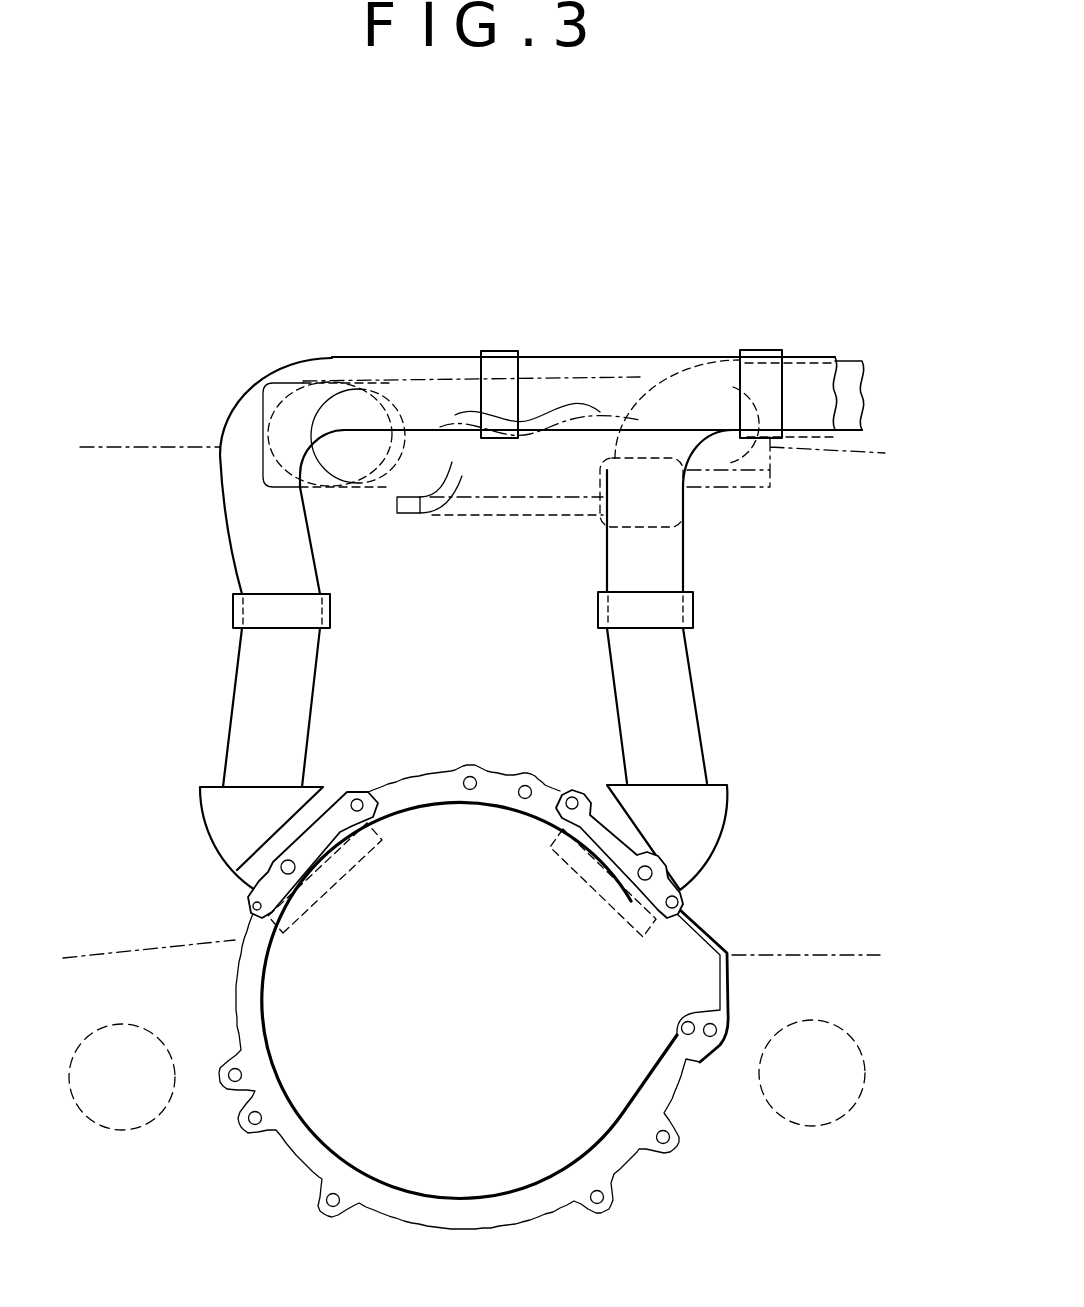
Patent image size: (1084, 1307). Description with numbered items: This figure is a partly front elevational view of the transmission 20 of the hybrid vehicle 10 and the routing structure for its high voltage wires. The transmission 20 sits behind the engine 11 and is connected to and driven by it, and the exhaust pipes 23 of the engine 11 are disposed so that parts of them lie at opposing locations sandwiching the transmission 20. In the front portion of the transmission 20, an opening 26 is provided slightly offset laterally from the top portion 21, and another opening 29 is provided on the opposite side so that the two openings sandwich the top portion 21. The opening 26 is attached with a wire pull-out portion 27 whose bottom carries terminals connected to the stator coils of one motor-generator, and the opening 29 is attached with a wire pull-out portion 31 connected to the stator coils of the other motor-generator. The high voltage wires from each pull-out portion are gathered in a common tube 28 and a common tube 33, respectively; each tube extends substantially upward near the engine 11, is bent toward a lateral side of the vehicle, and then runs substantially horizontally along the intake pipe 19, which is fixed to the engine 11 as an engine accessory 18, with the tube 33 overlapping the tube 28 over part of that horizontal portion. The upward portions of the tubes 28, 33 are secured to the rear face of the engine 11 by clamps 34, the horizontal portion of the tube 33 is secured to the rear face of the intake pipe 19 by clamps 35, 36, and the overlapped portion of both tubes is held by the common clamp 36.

The hybrid vehicle 10 is at (653, 251).
The engine 11 is at (157, 447).
The engine accessory 18 is at (507, 517).
The intake pipe 19 is at (574, 487).
The transmission 20 is at (657, 1093).
The top portion 21 is at (467, 772).
The exhaust pipe 23 is at (108, 1130).
The opening 26 is at (640, 937).
The wire pull-out portion 27 is at (695, 842).
The tube 28 is at (672, 696).
The opening 29 is at (287, 937).
The wire pull-out portion 31 is at (233, 837).
The tube 33 is at (283, 728).
The clamp 34 is at (310, 613).
The clamp 35 is at (494, 372).
The clamp 36 is at (752, 372).